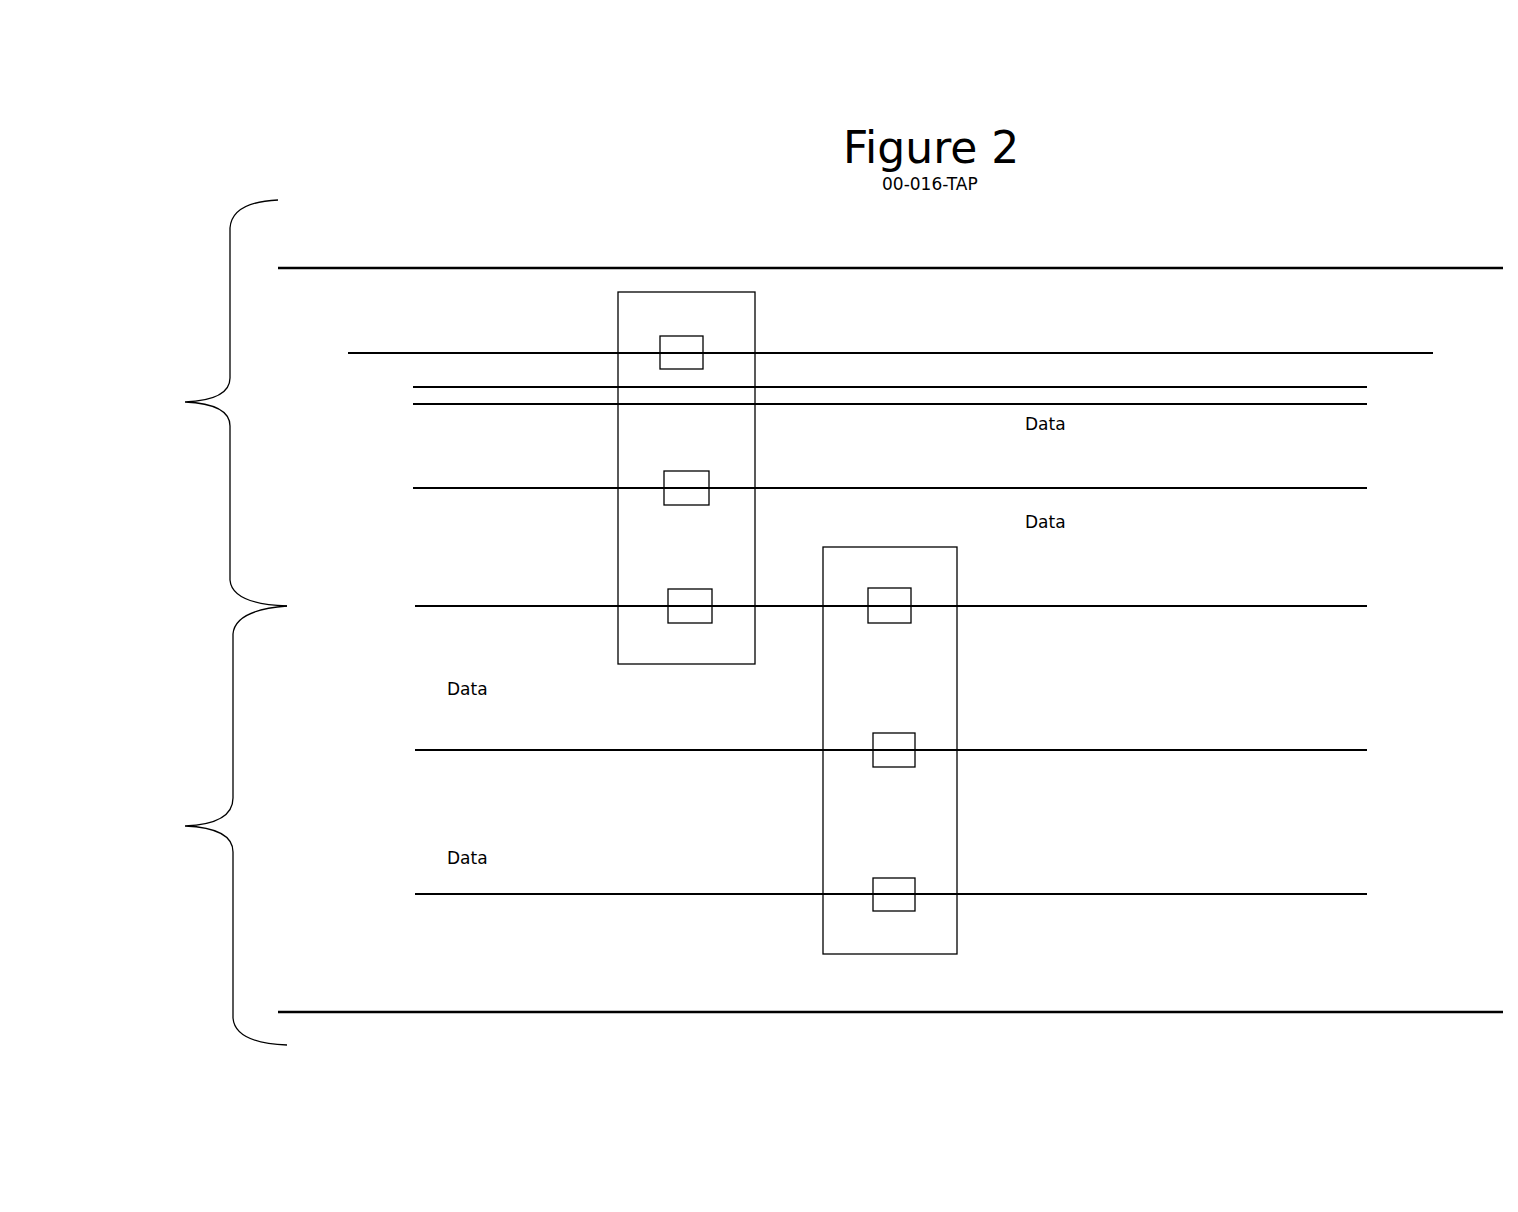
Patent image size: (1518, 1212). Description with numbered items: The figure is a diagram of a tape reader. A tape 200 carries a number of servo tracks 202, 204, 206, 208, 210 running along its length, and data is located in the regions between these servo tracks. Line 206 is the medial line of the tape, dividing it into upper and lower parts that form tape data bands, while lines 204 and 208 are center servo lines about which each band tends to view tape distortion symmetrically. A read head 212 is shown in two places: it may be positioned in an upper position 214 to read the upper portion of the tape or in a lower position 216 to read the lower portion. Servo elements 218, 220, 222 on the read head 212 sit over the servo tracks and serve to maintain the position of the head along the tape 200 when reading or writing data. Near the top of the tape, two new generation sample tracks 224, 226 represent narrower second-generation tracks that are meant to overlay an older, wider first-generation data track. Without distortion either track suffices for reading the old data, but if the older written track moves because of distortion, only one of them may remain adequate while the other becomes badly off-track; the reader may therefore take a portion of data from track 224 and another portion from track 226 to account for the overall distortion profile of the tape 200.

The tape 200 is at (890, 640).
The servo track 202 is at (1293, 352).
The center servo line 204 is at (1290, 487).
The medial line 206 is at (1292, 606).
The center servo line 208 is at (1302, 745).
The servo track 210 is at (1296, 893).
The read head 212 is at (787, 623).
The upper position 214 is at (211, 403).
The lower position 216 is at (211, 825).
The servo element 218 is at (680, 335).
The servo element 220 is at (686, 470).
The servo element 222 is at (690, 588).
The new generation sample track 224 is at (438, 386).
The new generation sample track 226 is at (438, 405).